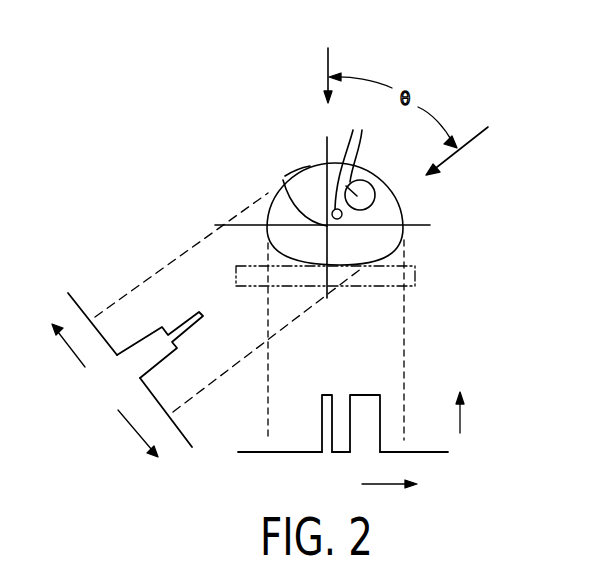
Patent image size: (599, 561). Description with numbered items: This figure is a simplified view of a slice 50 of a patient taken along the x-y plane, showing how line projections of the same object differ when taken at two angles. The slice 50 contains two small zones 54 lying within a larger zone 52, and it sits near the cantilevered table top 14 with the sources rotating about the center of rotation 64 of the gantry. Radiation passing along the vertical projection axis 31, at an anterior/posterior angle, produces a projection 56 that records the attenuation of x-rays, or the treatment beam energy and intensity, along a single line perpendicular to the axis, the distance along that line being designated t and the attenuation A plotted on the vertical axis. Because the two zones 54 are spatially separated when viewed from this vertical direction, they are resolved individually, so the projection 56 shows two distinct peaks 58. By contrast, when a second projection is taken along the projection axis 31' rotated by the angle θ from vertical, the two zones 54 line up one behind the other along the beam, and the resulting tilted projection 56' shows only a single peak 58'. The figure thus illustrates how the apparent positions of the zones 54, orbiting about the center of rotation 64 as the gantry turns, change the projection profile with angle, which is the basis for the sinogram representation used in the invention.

The cantilevered table top 14 is at (415, 273).
The projection axis 31 is at (361, 67).
The second projection axis 31' is at (480, 159).
The slice 50 is at (404, 214).
The larger zone 52 is at (299, 177).
The zones 54 is at (353, 166).
The projection 56 is at (383, 448).
The second projection 56' is at (123, 419).
The peaks 58 is at (351, 393).
The single peak 58' is at (186, 345).
The center of rotation 64 is at (302, 184).